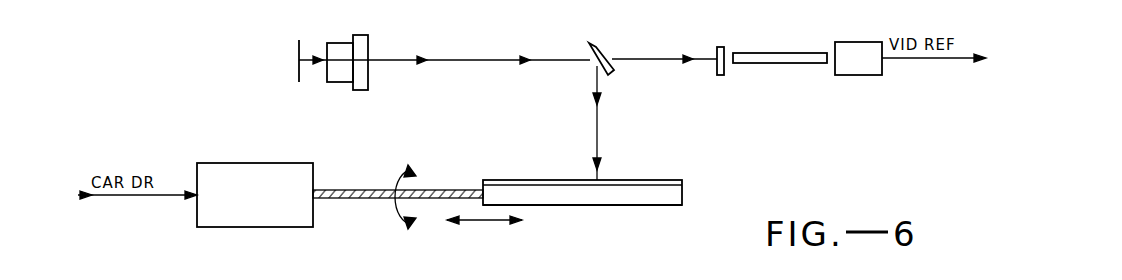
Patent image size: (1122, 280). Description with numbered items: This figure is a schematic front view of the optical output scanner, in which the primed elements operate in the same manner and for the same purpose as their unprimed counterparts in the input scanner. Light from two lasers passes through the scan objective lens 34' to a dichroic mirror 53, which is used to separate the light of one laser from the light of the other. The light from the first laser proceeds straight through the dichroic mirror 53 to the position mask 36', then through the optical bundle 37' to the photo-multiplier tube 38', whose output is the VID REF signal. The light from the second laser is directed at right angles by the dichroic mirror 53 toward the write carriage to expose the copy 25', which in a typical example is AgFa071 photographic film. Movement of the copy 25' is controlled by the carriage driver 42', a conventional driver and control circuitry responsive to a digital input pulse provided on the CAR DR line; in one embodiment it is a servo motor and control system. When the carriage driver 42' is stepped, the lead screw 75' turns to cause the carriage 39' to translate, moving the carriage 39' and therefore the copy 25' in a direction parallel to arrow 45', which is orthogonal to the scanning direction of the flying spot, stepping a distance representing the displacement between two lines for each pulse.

The scan objective lens 34' is at (369, 49).
The dichroic mirror 53 is at (603, 52).
The position mask 36' is at (732, 40).
The optical bundle 37' is at (780, 34).
The photo-multiplier tube 38' is at (869, 40).
The carriage driver 42' is at (267, 177).
The lead screw 75' is at (385, 210).
The arrow 45' is at (484, 236).
The copy 25' is at (582, 173).
The carriage 39' is at (582, 224).